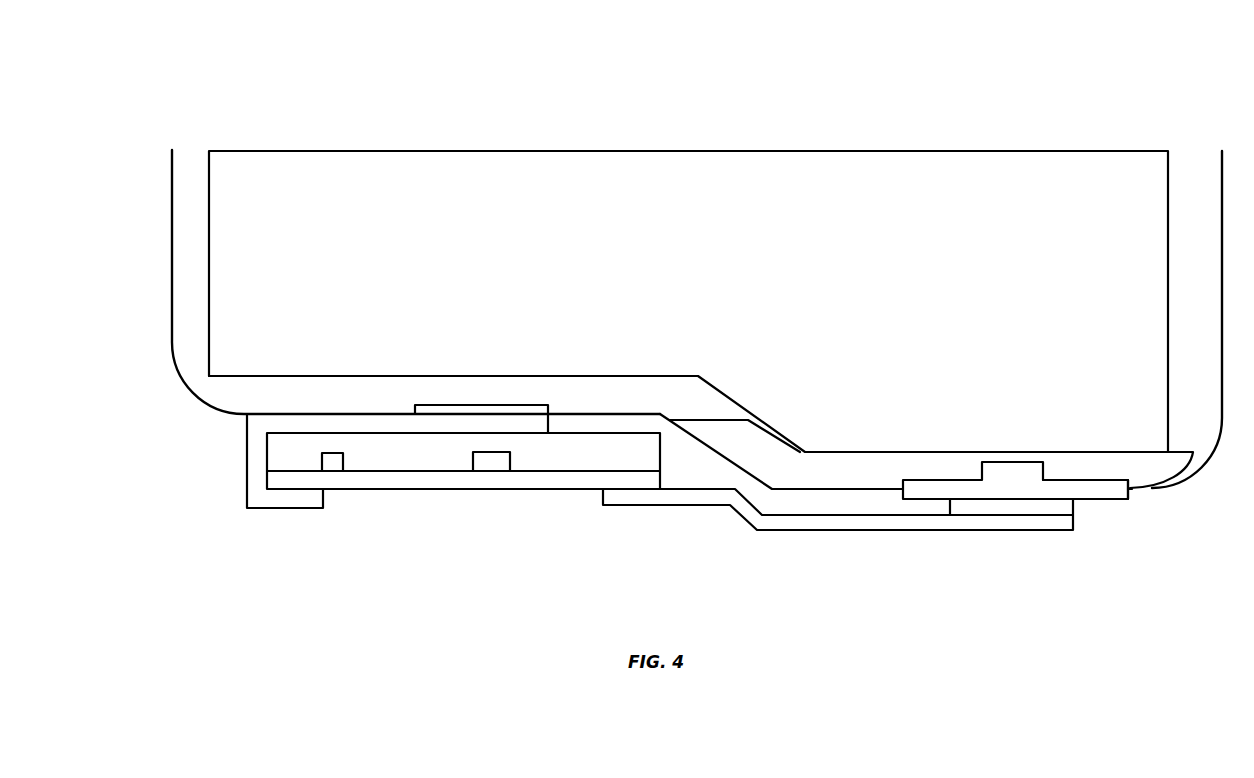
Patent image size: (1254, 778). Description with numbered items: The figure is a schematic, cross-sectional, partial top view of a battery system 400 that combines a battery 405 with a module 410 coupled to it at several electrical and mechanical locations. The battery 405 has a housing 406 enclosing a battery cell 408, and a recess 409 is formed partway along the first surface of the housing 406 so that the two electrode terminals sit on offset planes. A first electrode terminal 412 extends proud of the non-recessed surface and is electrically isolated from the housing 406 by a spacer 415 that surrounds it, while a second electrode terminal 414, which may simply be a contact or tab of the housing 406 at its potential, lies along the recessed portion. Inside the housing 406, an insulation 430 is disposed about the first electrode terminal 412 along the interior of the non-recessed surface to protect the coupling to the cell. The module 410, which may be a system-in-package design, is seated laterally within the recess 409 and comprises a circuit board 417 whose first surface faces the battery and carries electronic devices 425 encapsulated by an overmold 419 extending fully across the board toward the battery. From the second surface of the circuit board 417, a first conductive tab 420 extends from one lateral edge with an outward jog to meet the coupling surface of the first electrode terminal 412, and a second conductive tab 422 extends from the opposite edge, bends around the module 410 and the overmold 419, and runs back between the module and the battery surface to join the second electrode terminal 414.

The battery system 400 is at (154, 118).
The battery 405 is at (1182, 149).
The housing 406 is at (172, 285).
The battery cell 408 is at (209, 238).
The recess 409 is at (697, 438).
The module 410 is at (480, 489).
The first electrode terminal 412 is at (1023, 462).
The second electrode terminal 414 is at (487, 405).
The spacer 415 is at (1108, 500).
The circuit board 417 is at (528, 490).
The overmold 419 is at (266, 442).
The first conductive tab 420 is at (885, 531).
The second conductive tab 422 is at (277, 508).
The electronic devices 425 is at (330, 453).
The insulation 430 is at (858, 452).